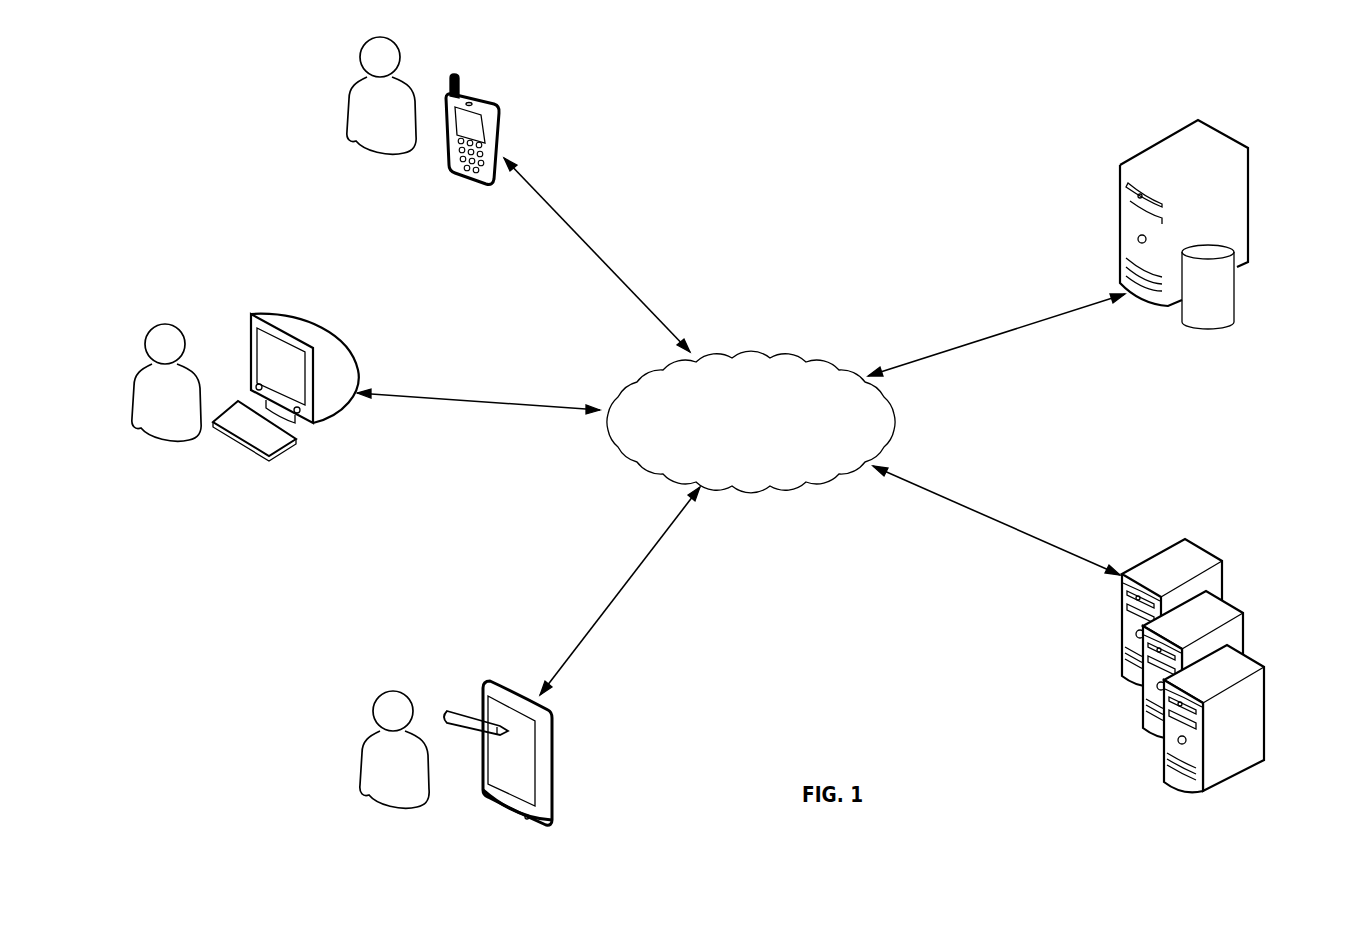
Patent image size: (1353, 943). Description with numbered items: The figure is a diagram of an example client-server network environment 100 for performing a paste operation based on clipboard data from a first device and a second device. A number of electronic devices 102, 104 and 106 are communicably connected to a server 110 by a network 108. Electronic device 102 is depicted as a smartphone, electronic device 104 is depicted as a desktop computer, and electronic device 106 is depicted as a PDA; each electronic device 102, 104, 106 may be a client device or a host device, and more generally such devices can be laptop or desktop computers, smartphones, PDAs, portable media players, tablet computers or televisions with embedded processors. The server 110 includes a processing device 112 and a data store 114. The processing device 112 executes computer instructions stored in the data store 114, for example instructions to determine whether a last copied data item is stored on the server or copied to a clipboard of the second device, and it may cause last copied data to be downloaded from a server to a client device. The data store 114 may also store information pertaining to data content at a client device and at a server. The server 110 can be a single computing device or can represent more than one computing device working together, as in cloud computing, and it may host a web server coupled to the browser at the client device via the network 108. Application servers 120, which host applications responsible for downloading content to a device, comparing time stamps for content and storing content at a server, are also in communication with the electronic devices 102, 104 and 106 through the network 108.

The network environment 100 is at (876, 84).
The electronic device 102 is at (483, 98).
The electronic device 104 is at (323, 323).
The electronic device 106 is at (492, 682).
The network 108 is at (748, 350).
The server 110 is at (1186, 225).
The processing device 112 is at (1222, 132).
The data store 114 is at (1216, 328).
The application servers 120 is at (1113, 762).